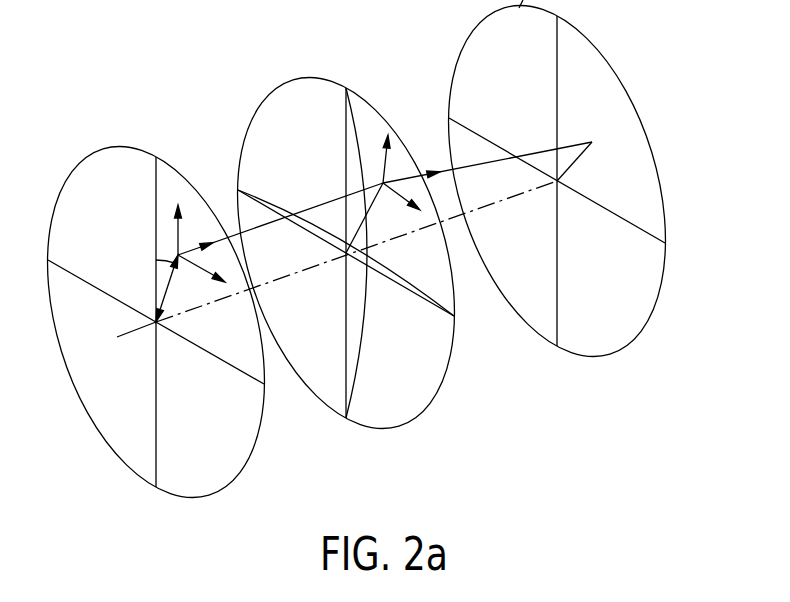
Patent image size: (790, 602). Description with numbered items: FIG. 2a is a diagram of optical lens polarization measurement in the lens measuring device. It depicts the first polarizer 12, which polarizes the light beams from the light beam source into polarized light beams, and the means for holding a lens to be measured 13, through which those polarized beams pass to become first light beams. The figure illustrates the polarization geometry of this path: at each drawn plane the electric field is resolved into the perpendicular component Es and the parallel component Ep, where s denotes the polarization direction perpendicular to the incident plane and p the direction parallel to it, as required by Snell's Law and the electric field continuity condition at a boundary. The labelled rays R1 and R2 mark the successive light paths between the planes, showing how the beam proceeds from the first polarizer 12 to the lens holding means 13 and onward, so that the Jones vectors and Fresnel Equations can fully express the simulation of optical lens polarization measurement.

The first polarizer 12 is at (117, 148).
The means for holding a lens to be measured 13 is at (308, 80).
The first ray R1 is at (280, 219).
The second ray R2 is at (487, 162).